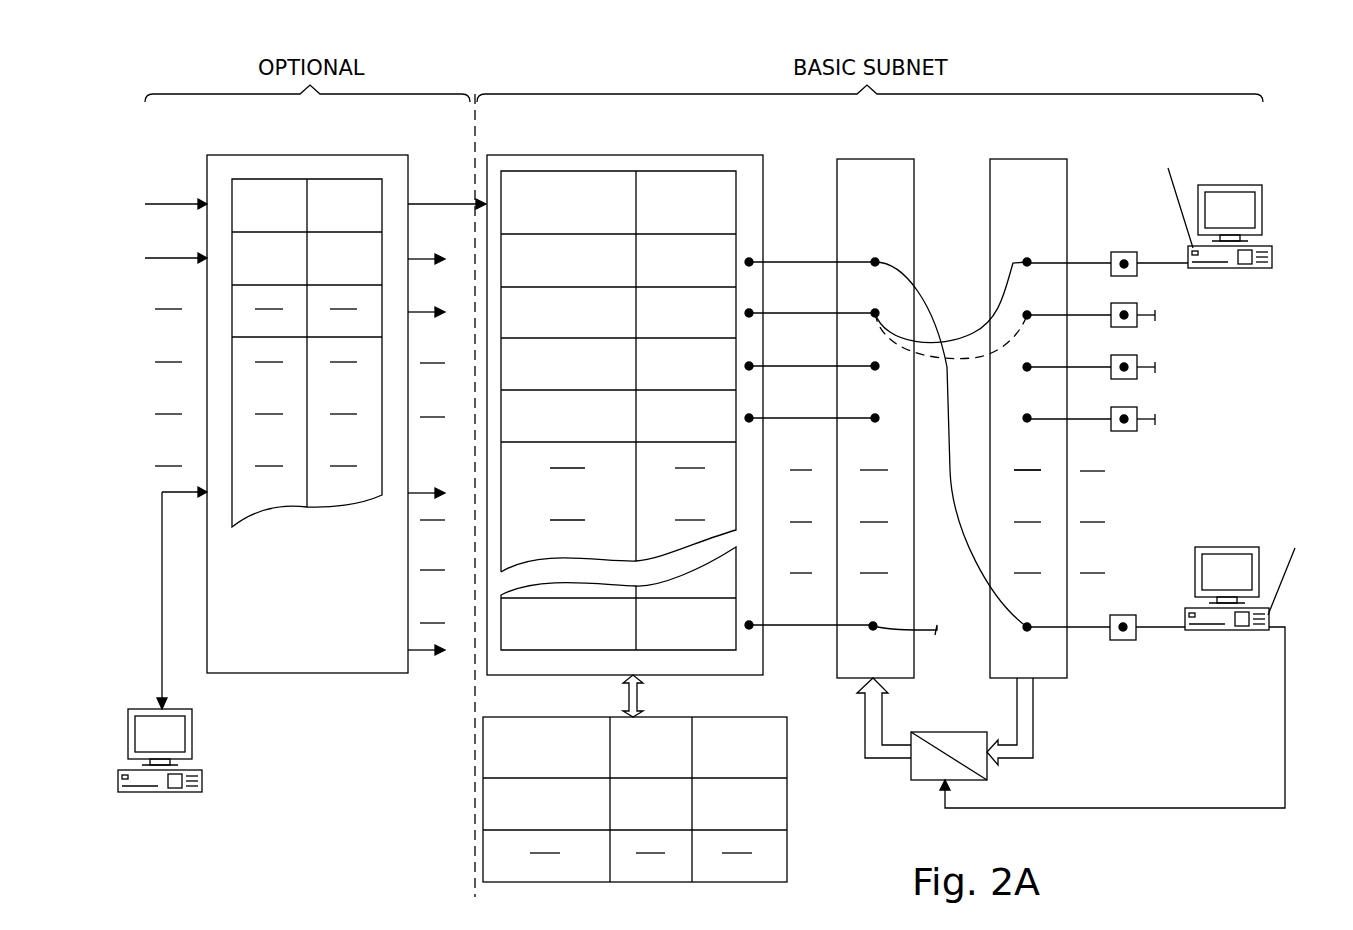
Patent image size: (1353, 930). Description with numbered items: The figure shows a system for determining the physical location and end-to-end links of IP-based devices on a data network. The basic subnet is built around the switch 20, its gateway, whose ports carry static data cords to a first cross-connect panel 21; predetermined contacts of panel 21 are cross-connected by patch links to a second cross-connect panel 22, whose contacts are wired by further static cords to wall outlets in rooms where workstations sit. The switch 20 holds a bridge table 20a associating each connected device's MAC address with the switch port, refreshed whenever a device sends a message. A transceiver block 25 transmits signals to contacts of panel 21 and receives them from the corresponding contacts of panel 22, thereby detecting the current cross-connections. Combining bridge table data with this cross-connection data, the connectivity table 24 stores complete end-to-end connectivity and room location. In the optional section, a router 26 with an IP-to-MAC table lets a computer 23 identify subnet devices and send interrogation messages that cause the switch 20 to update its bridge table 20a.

The router 26 is at (250, 153).
The computer 23 is at (196, 735).
The switch 20 is at (562, 155).
The bridge table 20a is at (697, 170).
The first cross-connect panel 21 is at (862, 158).
The second cross-connect panel 22 is at (1008, 158).
The transceiver block 25 is at (937, 732).
The connectivity table 24 is at (483, 803).